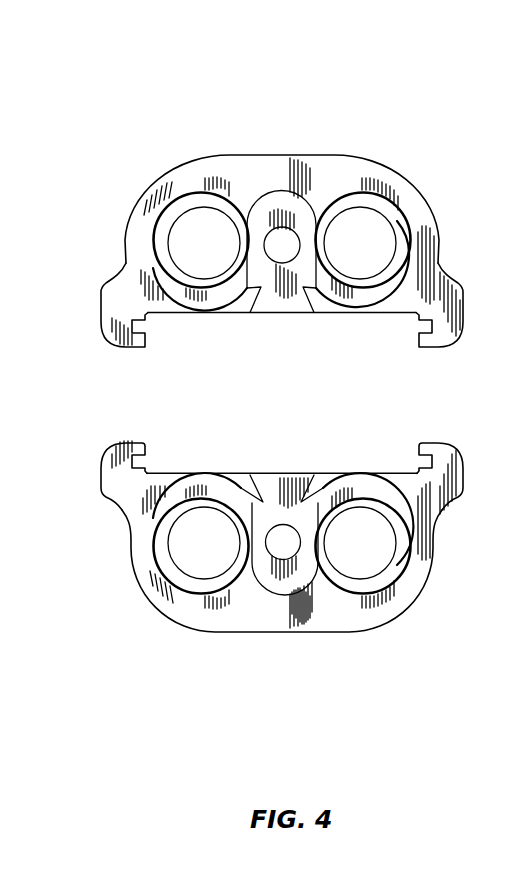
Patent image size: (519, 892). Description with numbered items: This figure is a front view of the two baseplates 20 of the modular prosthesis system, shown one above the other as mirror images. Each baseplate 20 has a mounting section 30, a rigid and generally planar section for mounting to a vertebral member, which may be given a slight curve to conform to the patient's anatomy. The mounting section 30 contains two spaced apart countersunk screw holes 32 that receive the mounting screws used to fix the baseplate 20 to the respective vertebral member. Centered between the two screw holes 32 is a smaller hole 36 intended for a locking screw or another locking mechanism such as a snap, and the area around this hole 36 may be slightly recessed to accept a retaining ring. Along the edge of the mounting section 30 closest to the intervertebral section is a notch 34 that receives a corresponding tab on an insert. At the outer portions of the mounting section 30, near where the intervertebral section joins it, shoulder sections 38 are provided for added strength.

The baseplate 20 is at (322, 110).
The mounting section 30 is at (393, 183).
The countersunk screw holes 32 is at (193, 230).
The notch 34 is at (275, 305).
The hole 36 is at (278, 240).
The shoulder sections 38 is at (105, 287).